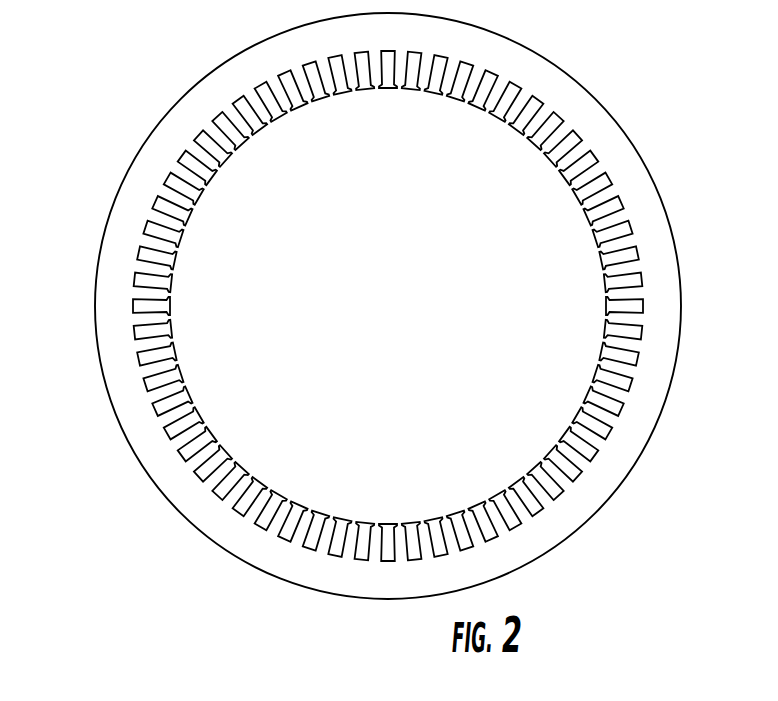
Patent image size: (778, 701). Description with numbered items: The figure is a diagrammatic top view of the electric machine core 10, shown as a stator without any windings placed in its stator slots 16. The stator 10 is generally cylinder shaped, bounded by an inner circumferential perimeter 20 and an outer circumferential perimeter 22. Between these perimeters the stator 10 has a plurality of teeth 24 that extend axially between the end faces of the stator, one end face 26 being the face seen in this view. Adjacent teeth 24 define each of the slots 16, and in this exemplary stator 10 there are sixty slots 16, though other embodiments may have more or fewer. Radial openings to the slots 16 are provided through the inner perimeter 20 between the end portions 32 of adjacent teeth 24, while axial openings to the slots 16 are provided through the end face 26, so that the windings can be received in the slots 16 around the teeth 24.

The electric machine core 10 is at (594, 61).
The stator slots 16 is at (158, 335).
The inner circumferential perimeter 20 is at (308, 512).
The outer circumferential perimeter 22 is at (600, 510).
The teeth 24 is at (124, 322).
The end face 26 is at (145, 160).
The end portions 32 is at (142, 373).